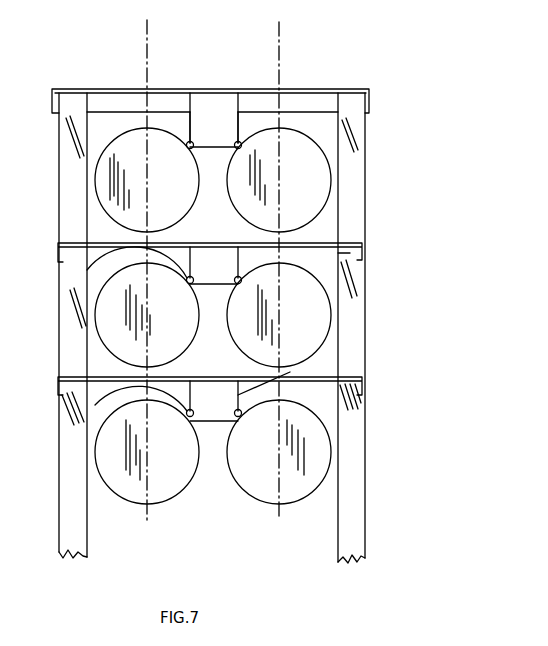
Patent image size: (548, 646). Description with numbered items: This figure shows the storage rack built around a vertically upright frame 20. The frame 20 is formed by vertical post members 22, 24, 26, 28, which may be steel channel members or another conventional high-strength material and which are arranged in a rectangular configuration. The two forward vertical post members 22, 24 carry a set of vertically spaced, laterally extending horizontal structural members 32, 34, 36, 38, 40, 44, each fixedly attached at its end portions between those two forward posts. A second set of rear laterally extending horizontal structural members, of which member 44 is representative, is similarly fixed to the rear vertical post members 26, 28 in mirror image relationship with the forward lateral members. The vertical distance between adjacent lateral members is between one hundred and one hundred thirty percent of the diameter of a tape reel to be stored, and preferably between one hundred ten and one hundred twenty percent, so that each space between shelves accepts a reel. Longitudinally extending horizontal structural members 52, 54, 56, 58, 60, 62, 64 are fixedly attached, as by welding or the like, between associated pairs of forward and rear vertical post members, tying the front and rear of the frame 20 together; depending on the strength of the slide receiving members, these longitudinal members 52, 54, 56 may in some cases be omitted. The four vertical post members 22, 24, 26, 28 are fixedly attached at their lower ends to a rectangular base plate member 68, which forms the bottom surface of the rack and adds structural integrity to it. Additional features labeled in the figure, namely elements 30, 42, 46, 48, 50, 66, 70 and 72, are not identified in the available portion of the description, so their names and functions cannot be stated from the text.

The vertically upright frame 20 is at (385, 79).
The vertical post member 22 is at (93, 90).
The vertical post member 24 is at (88, 549).
The vertical post member 26 is at (366, 420).
The vertical post member 28 is at (180, 60).
The middle rail 30 is at (238, 276).
The laterally extending horizontal structural member 32 is at (238, 410).
The laterally extending horizontal structural member 34 is at (188, 140).
The laterally extending horizontal structural member 36 is at (240, 140).
The laterally extending horizontal structural member 38 is at (190, 276).
The laterally extending horizontal structural member 40 is at (240, 278).
The lower bracket 42 is at (190, 409).
The laterally extending horizontal structural member 44 is at (241, 413).
The left hanger 46 is at (187, 140).
The right hanger 48 is at (241, 140).
The middle left support arm 50 is at (87, 270).
The longitudinally extending horizontal structural member 52 is at (345, 255).
The longitudinally extending horizontal structural member 54 is at (95, 405).
The longitudinally extending horizontal structural member 56 is at (239, 412).
The longitudinally extending horizontal structural member 58 is at (107, 205).
The longitudinally extending horizontal structural member 60 is at (310, 160).
The longitudinally extending horizontal structural member 62 is at (108, 308).
The longitudinally extending horizontal structural member 64 is at (305, 318).
The bowling ball 66 is at (162, 492).
The rectangular base plate member 68 is at (318, 455).
The left vertical centerline 70 is at (150, 32).
The right vertical centerline 72 is at (282, 35).